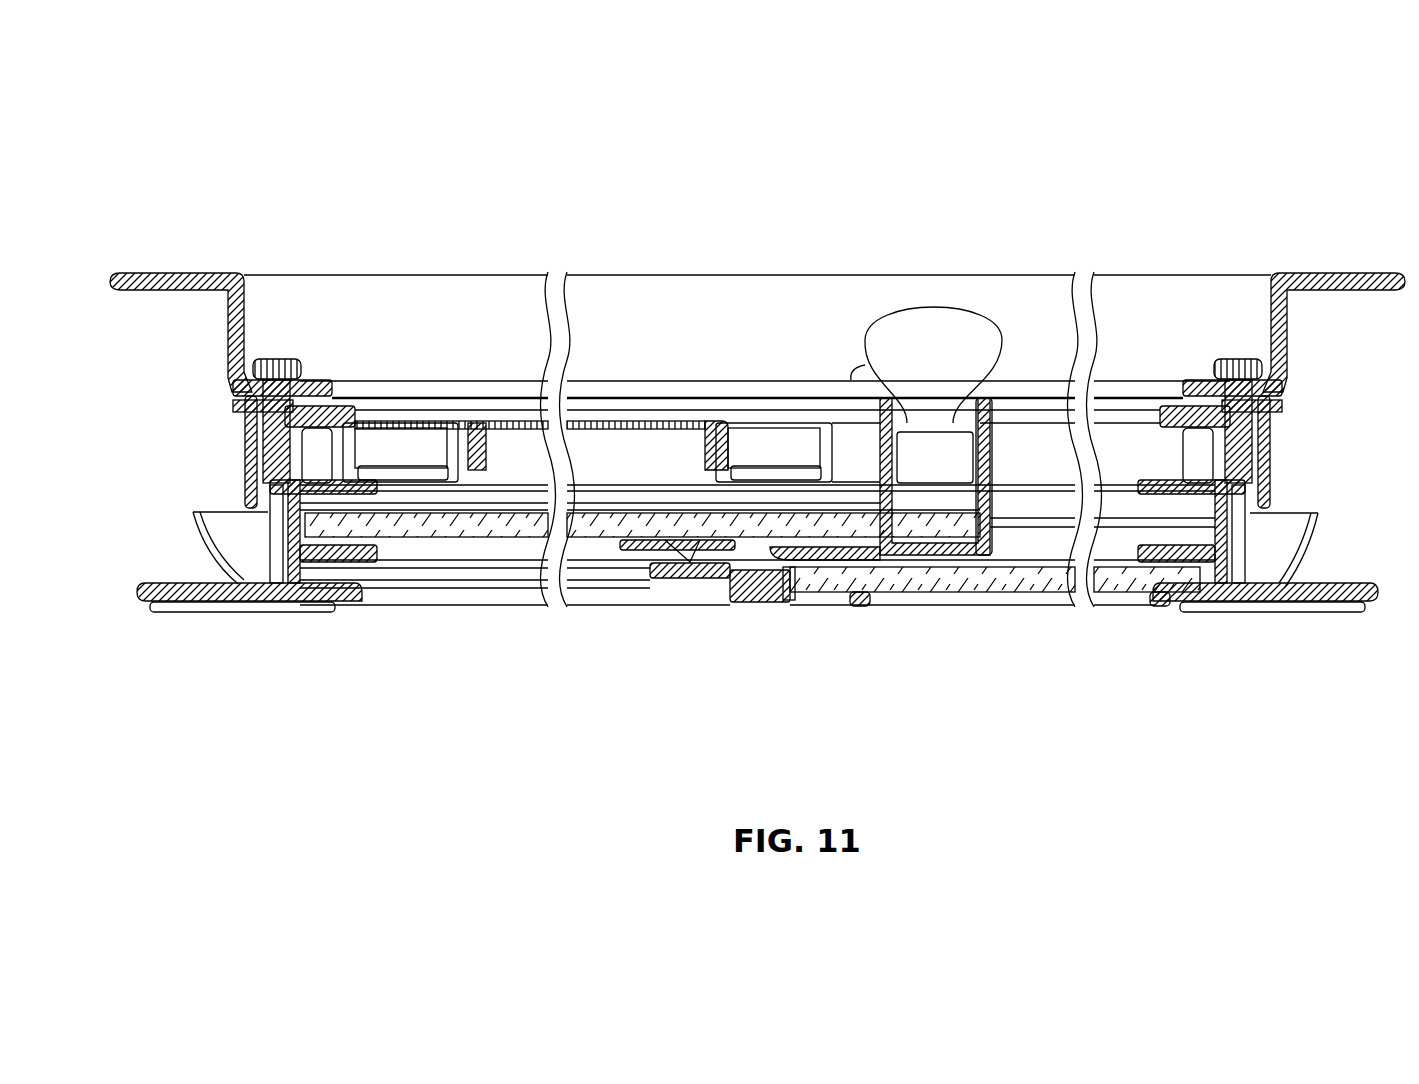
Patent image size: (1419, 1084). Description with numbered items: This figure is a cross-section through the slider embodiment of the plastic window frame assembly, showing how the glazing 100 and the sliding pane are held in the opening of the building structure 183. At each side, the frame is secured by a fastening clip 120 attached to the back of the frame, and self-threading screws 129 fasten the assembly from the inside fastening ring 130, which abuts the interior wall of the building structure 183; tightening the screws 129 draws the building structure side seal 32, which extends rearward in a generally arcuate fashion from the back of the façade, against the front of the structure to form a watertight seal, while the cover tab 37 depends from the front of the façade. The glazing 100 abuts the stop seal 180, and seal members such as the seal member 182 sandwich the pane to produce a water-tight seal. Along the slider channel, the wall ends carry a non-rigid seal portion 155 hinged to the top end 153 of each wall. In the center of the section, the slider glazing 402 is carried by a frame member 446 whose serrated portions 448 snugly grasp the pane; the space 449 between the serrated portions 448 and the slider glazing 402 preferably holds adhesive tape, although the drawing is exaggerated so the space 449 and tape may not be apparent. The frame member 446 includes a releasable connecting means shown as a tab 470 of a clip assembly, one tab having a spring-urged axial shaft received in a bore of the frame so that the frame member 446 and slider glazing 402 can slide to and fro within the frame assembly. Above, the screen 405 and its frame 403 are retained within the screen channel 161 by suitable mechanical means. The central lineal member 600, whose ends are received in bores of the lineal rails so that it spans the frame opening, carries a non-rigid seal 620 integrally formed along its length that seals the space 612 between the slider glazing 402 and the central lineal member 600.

The building structure side seal 32 is at (1300, 555).
The cover tab 37 is at (1305, 612).
The glazing 100 is at (915, 562).
The fastening clip 120 is at (1270, 445).
The self-threading screw 129 is at (278, 359).
The inside fastening ring 130 is at (1345, 273).
The top end 153 is at (860, 592).
The non-rigid seal portion 155 is at (1270, 555).
The screen channel 161 is at (850, 445).
The stop seal 180 is at (793, 575).
The seal member 182 is at (1160, 606).
The building structure 183 is at (1240, 290).
The slider glazing 402 is at (430, 523).
The frame 403 is at (415, 423).
The screen 405 is at (668, 421).
The frame member 446 is at (987, 498).
The serrated portions 448 is at (930, 548).
The space 449 is at (960, 530).
The tab 470 is at (930, 325).
The central lineal member 600 is at (735, 605).
The space 612 is at (760, 548).
The non-rigid seal 620 is at (625, 543).